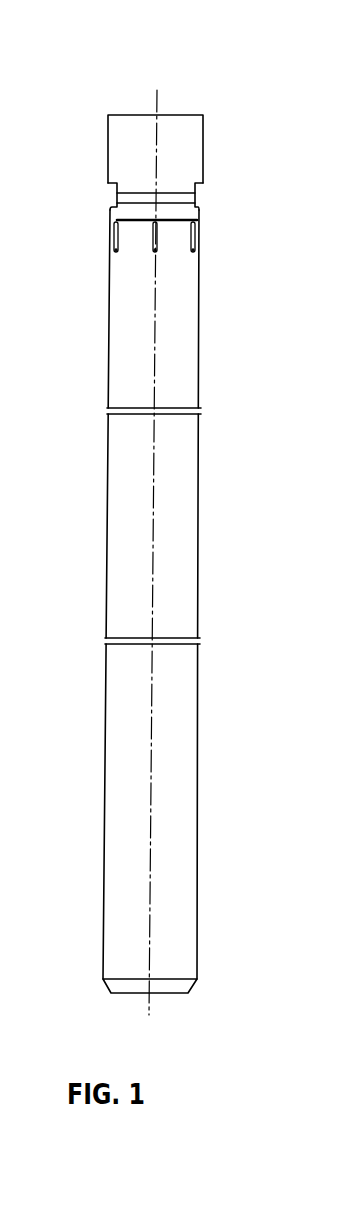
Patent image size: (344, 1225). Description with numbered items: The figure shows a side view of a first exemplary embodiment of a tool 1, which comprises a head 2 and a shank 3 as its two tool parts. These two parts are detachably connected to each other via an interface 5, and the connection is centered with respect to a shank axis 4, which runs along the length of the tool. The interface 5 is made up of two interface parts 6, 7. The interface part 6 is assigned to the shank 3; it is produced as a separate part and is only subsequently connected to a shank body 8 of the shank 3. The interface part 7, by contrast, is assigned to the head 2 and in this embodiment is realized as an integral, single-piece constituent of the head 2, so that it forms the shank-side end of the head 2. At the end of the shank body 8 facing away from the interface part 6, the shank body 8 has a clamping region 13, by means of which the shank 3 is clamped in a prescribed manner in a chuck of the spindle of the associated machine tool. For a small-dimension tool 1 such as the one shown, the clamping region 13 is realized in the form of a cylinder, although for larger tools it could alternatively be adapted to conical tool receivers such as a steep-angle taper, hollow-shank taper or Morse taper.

The tool 1 is at (162, 515).
The head 2 is at (188, 115).
The shank 3 is at (218, 525).
The shank axis 4 is at (157, 97).
The interface 5 is at (213, 222).
The interface part 6 is at (110, 362).
The interface part 7 is at (118, 210).
The shank body 8 is at (197, 765).
The clamping region 13 is at (187, 844).